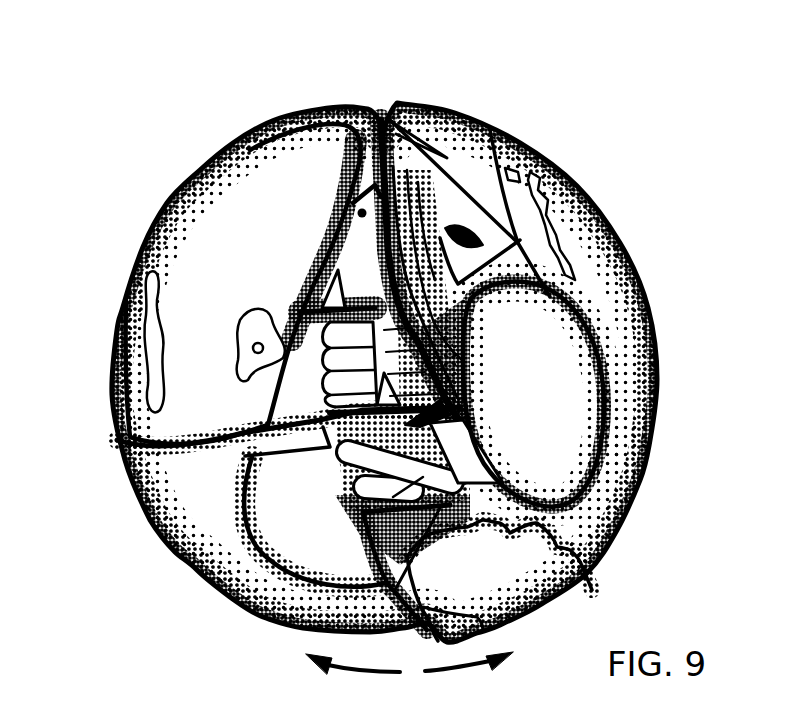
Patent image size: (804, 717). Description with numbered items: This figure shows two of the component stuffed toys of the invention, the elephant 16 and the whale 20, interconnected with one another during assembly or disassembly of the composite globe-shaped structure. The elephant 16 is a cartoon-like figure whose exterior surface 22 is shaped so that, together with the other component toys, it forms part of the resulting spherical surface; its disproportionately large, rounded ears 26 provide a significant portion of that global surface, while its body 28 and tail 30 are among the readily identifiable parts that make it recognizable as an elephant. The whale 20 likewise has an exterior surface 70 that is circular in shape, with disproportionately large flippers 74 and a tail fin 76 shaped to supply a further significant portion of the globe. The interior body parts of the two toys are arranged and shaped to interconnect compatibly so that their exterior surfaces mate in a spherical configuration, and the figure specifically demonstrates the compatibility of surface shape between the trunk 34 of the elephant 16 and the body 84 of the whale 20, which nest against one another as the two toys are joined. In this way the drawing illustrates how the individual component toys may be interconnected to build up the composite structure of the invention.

The elephant 16 is at (217, 252).
The whale 20 is at (607, 313).
The exterior surface 22 is at (147, 248).
The ears 26 is at (180, 417).
The body 28 is at (150, 521).
The tail 30 is at (307, 630).
The trunk 34 is at (375, 290).
The exterior surface 70 is at (658, 357).
The flippers 74 is at (560, 427).
The tail fin 76 is at (477, 593).
The body 84 is at (460, 293).